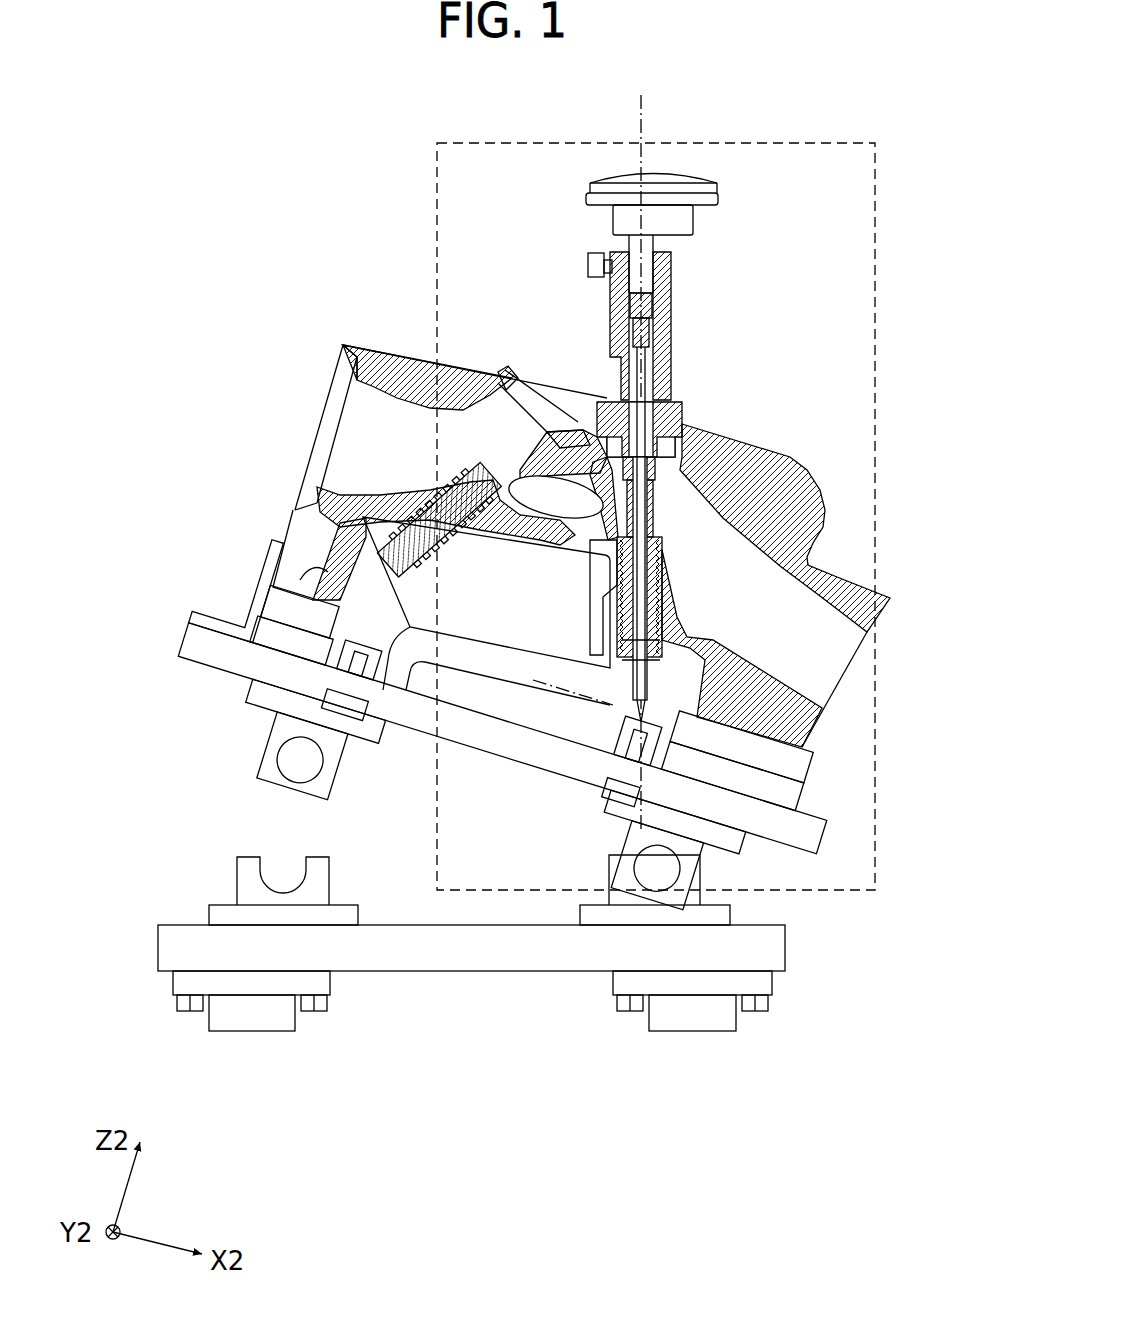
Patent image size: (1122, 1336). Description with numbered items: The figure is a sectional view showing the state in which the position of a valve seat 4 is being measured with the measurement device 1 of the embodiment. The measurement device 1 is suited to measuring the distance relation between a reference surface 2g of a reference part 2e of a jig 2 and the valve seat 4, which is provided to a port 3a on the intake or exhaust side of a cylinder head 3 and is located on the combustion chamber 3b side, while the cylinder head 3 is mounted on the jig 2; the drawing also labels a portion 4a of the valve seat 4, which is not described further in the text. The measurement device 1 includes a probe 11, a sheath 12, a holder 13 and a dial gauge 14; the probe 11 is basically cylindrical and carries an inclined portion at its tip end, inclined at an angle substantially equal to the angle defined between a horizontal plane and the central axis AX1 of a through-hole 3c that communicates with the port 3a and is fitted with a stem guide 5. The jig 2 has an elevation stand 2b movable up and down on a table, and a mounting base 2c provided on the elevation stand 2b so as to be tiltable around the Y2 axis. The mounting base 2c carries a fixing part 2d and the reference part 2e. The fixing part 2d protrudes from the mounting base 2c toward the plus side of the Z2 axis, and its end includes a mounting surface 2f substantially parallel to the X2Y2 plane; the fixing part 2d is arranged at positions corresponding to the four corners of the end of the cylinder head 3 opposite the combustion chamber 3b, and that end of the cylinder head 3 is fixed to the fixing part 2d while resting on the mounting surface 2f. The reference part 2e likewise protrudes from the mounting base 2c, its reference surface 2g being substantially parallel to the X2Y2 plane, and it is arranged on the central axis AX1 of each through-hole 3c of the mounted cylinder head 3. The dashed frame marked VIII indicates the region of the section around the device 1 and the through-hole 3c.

The measurement device 1 is at (680, 292).
The jig 2 is at (157, 935).
The elevation stand 2b is at (165, 955).
The mounting base 2c is at (236, 582).
The fixing part 2d is at (502, 738).
The reference part 2e is at (631, 761).
The mounting surface 2f is at (296, 624).
The reference surface 2g is at (738, 761).
The cylinder head 3 is at (290, 438).
The port 3a is at (406, 418).
The combustion chamber 3b is at (572, 397).
The through-hole 3c is at (612, 597).
The valve seat 4 is at (490, 363).
The tube end 4a is at (527, 370).
The stem guide 5 is at (682, 568).
The probe 11 is at (660, 718).
The sheath 12 is at (648, 706).
The holder 13 is at (660, 338).
The dial gauge 14 is at (718, 198).
The central axis AX1 is at (641, 110).
The section indication VIII is at (845, 143).